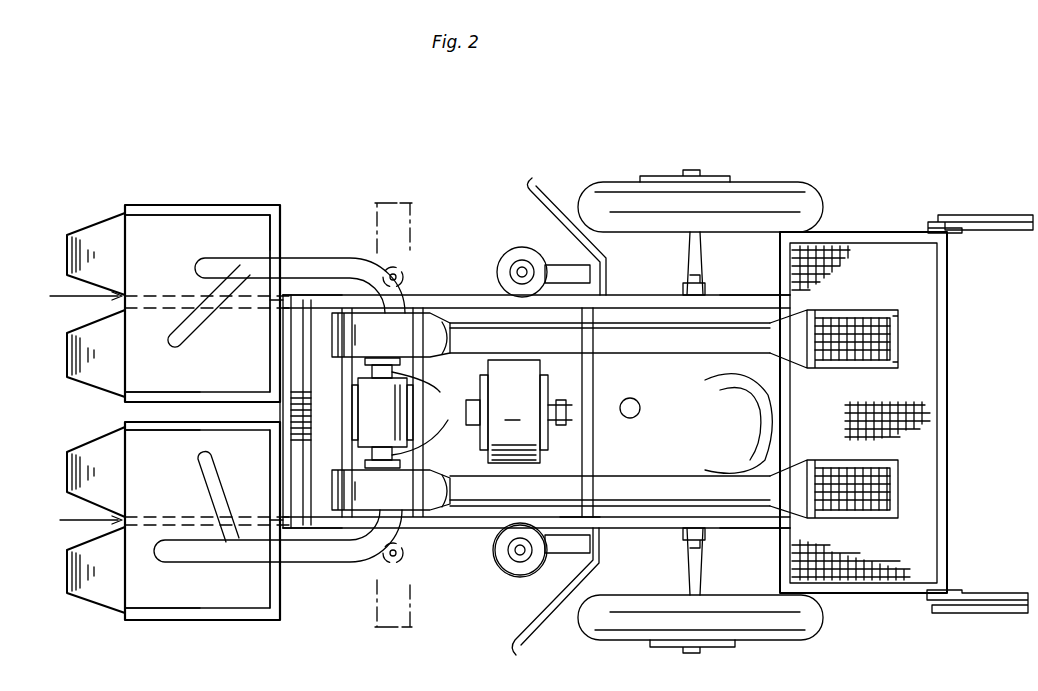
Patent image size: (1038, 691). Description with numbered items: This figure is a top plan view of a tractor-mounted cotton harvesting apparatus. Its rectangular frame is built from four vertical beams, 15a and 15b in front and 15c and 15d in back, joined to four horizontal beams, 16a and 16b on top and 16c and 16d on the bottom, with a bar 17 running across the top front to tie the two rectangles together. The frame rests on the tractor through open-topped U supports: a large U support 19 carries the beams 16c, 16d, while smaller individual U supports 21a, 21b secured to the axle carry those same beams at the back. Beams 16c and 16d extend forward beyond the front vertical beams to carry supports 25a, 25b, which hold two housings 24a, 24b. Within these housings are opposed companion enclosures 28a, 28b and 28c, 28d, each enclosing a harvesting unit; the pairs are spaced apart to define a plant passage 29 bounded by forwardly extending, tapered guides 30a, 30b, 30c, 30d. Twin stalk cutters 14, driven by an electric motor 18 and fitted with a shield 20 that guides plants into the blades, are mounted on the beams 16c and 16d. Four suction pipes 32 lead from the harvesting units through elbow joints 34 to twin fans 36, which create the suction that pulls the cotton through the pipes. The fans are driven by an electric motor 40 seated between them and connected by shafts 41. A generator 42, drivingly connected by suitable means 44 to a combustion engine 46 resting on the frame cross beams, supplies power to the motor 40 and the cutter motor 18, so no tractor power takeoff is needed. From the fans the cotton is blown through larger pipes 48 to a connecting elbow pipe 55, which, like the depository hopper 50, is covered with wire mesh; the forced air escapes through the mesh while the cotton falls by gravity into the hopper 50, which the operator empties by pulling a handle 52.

The twin stalk cutters 14 is at (568, 556).
The vertical beam 15a is at (352, 292).
The vertical beam 15b is at (350, 532).
The vertical beam 15c is at (780, 296).
The vertical beam 15d is at (776, 530).
The horizontal beam 16a is at (556, 295).
The horizontal beam 16b is at (610, 530).
The horizontal beam 16c is at (318, 295).
The horizontal beam 16d is at (312, 540).
The bar 17 is at (332, 400).
The electric motor 18 is at (520, 577).
The U support 19 is at (278, 345).
The shield 20 is at (540, 185).
The U support 21a is at (705, 290).
The U support 21b is at (705, 540).
The housing 24a is at (217, 194).
The housing 24b is at (211, 631).
The support 25a is at (278, 335).
The support 25b is at (280, 470).
The companion enclosure 28a is at (125, 205).
The companion enclosure 28b is at (150, 378).
The companion enclosure 28c is at (162, 443).
The companion enclosure 28d is at (148, 595).
The plant passage 29 is at (67, 406).
The tapered guide 30a is at (67, 248).
The tapered guide 30b is at (70, 350).
The tapered guide 30c is at (92, 444).
The tapered guide 30d is at (80, 582).
The suction pipe 32 is at (242, 258).
The elbow joint 34 is at (372, 205).
The fan 36 is at (430, 313).
The electric motor 40 is at (382, 413).
The shaft 41 is at (422, 413).
The generator 42 is at (507, 411).
The drive means 44 is at (572, 412).
The combustion engine 46 is at (614, 358).
The pipe 48 is at (662, 350).
The hopper 50 is at (940, 412).
The handle 52 is at (970, 236).
The connecting elbow pipe 55 is at (812, 372).